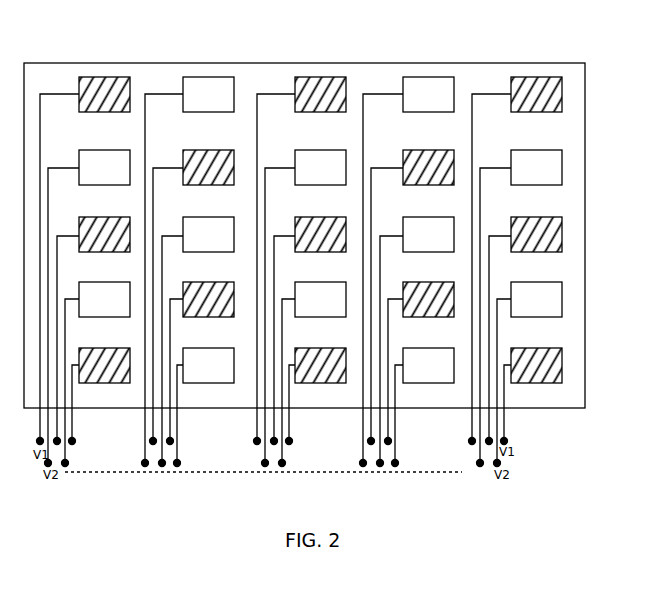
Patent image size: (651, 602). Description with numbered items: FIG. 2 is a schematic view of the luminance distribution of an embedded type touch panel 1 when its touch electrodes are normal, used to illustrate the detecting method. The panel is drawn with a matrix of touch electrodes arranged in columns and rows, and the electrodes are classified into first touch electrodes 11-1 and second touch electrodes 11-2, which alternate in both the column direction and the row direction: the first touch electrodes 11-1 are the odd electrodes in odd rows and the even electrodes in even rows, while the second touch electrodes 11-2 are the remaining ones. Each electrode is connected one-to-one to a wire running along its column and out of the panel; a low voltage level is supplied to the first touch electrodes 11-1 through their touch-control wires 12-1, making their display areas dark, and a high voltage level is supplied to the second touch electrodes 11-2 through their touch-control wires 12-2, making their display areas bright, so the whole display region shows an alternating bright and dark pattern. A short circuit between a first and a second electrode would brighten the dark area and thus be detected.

The embedded type touch panel 1 is at (552, 63).
The first touch electrodes 11-1 is at (321, 76).
The second touch electrodes 11-2 is at (207, 76).
The touch-control wires corresponding to the first touch electrodes 12-1 is at (270, 93).
The touch-control wires corresponding to the second touch electrodes 12-2 is at (165, 93).